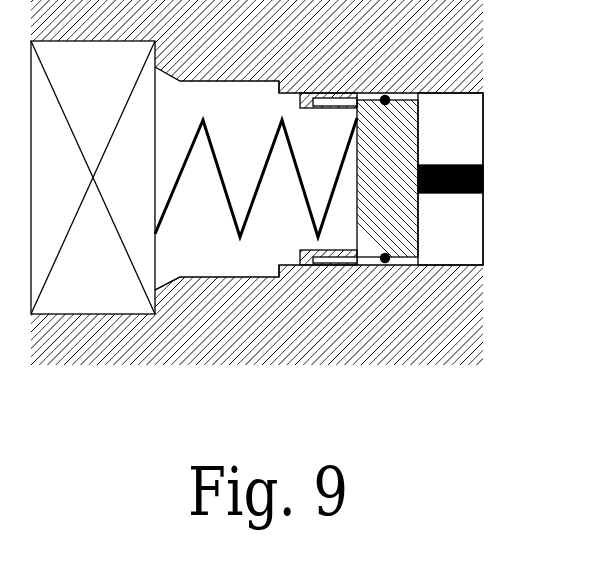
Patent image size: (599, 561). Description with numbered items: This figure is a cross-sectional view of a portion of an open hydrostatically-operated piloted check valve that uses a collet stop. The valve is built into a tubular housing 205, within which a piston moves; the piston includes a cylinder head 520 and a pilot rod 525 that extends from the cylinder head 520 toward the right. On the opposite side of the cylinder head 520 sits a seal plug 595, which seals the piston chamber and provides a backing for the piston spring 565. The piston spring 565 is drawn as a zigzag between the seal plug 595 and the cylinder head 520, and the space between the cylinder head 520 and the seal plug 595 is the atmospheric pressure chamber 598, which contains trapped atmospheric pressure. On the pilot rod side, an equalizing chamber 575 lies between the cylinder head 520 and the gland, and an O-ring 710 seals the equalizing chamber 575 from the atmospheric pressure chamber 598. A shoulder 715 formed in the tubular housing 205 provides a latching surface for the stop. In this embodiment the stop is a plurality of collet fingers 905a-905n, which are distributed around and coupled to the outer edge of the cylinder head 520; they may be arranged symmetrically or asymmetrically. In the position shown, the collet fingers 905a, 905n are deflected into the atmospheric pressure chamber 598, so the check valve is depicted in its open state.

The tubular housing 205 is at (272, 30).
The seal plug 595 is at (125, 54).
The piston spring 565 is at (209, 126).
The shoulder 715 is at (276, 87).
The atmospheric pressure chamber 598 is at (185, 263).
The collet finger 905a is at (330, 102).
The collet finger 905n is at (335, 256).
The cylinder head 520 is at (401, 190).
The O-ring 710 is at (387, 95).
The pilot rod 525 is at (467, 165).
The equalizing chamber 575 is at (458, 262).